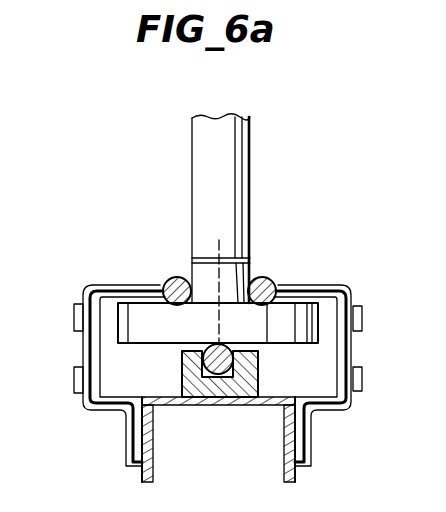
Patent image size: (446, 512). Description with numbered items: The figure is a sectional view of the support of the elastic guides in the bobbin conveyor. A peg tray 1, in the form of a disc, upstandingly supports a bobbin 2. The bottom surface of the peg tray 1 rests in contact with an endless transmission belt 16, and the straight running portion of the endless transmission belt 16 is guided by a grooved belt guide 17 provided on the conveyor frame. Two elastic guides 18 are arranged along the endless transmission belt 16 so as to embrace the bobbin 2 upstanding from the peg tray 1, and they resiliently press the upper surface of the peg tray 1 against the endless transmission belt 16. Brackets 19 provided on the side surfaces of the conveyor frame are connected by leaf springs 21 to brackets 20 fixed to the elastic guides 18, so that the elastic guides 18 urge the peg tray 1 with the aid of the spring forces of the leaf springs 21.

The peg tray 1 is at (137, 310).
The bobbin 2 is at (250, 153).
The endless transmission belt 16 is at (213, 374).
The grooved belt guide 17 is at (242, 385).
The elastic guide 18 is at (168, 277).
The bracket 19 is at (110, 415).
The bracket 20 is at (93, 287).
The leaf spring 21 is at (83, 346).